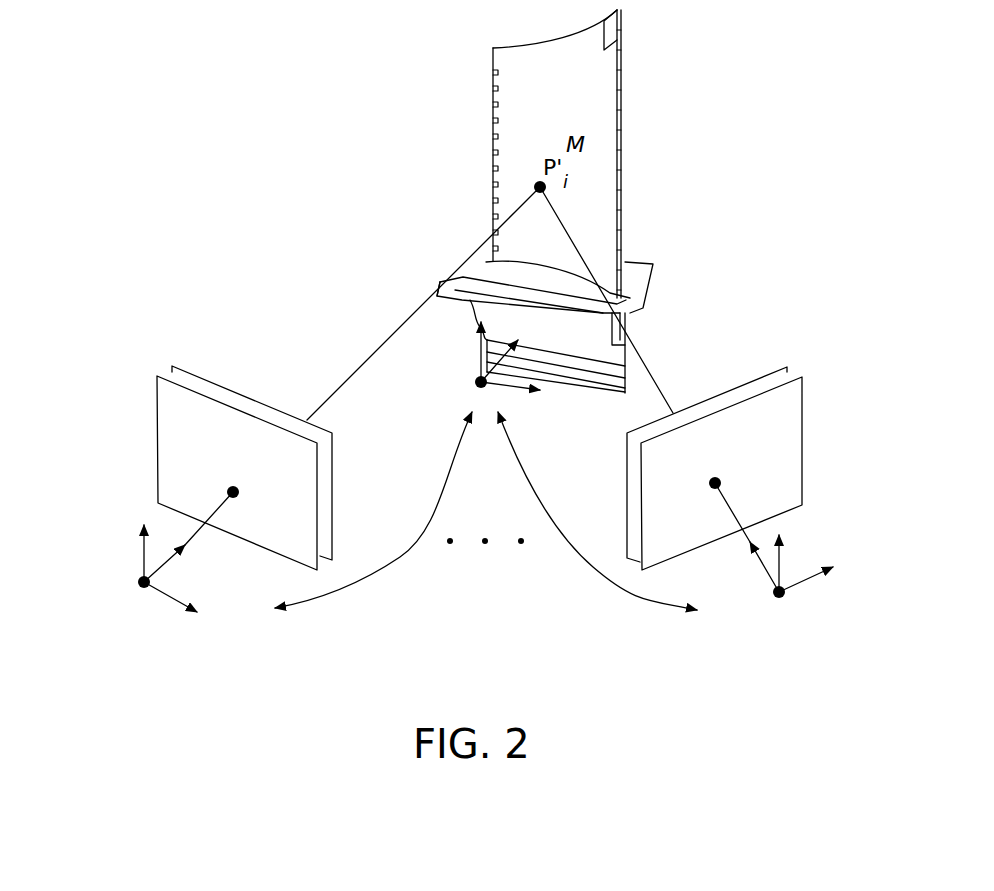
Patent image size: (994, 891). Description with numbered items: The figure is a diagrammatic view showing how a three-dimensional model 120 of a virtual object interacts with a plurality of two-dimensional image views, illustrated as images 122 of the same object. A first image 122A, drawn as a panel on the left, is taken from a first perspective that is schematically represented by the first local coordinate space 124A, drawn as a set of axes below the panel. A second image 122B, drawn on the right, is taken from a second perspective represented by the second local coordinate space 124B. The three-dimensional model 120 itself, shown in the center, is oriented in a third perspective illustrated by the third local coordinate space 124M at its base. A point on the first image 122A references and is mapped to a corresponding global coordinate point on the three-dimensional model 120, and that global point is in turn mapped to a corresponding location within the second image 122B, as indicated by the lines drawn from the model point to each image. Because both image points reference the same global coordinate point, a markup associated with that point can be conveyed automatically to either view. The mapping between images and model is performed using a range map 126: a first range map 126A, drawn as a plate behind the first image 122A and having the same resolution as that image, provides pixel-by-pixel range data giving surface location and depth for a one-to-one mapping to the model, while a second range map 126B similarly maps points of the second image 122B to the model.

The 3D model 120 is at (493, 133).
The image 122 is at (152, 417).
The first image 122A is at (157, 440).
The second image 122B is at (805, 443).
The first local coordinate space 124A is at (144, 597).
The second local coordinate space 124B is at (782, 600).
The third local coordinate space 124M is at (474, 386).
The range map 126 is at (166, 358).
The first range map 126A is at (218, 385).
The second range map 126B is at (745, 384).